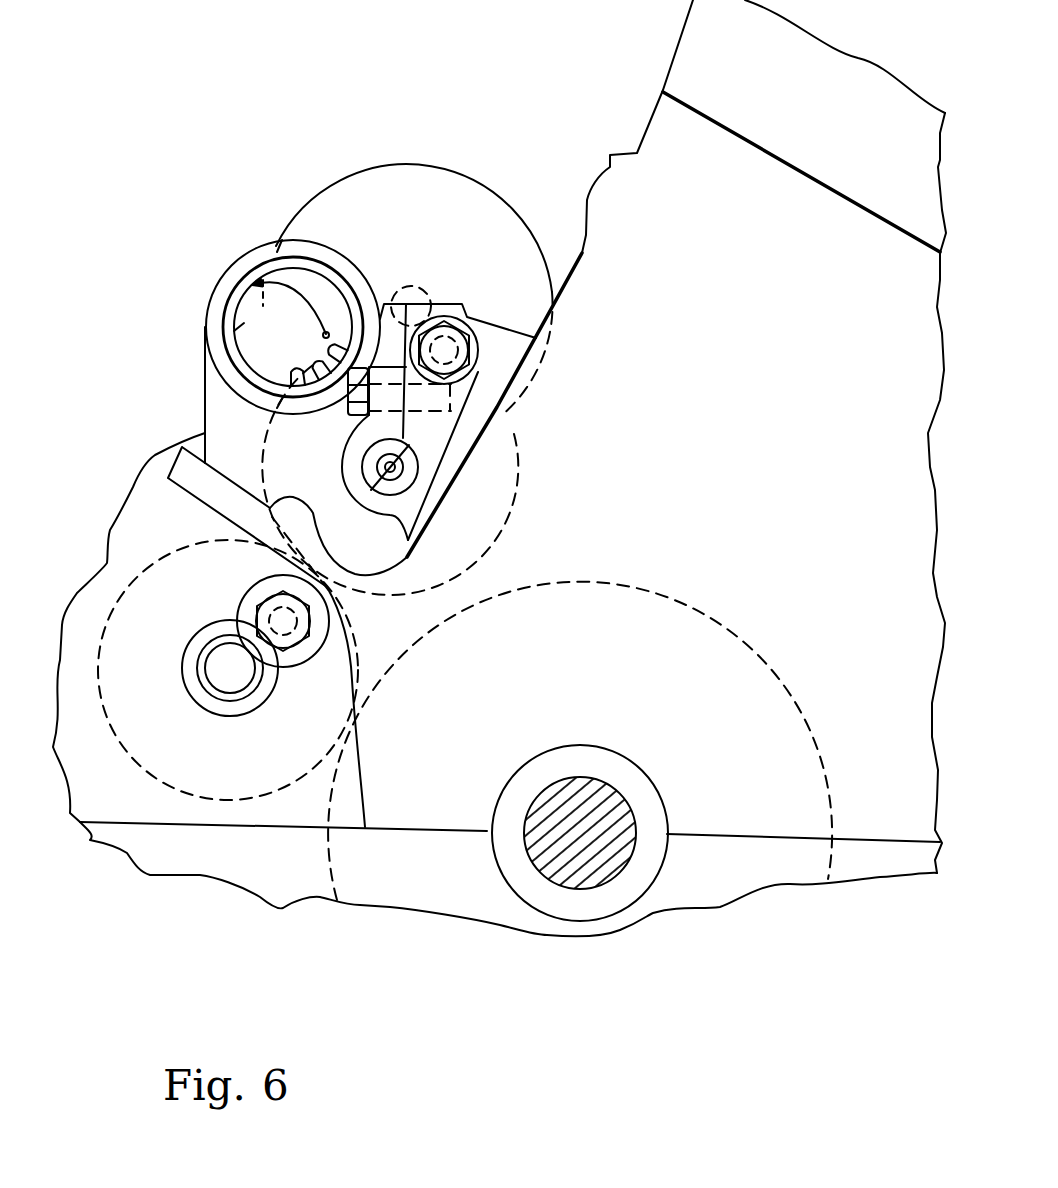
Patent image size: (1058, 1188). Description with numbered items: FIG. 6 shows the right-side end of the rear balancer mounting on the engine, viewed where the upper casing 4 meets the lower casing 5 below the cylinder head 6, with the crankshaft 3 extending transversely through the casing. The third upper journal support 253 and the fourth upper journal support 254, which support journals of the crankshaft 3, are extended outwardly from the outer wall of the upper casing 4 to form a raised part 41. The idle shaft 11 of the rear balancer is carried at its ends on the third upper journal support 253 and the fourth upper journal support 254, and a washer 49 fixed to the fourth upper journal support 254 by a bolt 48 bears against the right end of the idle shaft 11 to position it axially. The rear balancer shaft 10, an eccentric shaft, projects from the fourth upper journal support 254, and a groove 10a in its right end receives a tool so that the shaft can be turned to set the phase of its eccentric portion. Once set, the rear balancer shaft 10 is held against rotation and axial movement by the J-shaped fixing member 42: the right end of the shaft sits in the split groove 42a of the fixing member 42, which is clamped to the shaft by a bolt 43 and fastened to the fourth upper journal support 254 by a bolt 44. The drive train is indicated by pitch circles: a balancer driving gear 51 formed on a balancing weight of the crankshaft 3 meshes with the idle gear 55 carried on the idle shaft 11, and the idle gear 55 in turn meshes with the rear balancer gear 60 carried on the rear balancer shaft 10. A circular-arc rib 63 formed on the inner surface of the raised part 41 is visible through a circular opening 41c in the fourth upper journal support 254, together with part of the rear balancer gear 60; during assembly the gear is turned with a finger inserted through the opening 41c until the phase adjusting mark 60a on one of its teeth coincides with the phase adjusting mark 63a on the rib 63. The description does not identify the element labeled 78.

The crankshaft 3 is at (616, 807).
The upper casing 4 is at (572, 295).
The lower casing 5 is at (252, 880).
The cylinder head 6 is at (692, 57).
The rear balancer shaft 10 is at (408, 501).
The groove 10a is at (373, 492).
The idle shaft 11 is at (230, 680).
The third upper journal support 253 is at (257, 277).
The raised part 41 is at (205, 425).
The circular opening 41c is at (243, 323).
The fixing member 42 is at (461, 436).
The split groove 42a is at (371, 459).
The bolt 43 is at (356, 417).
The bolt 44 is at (461, 318).
The bolt 48 is at (262, 605).
The washer 49 is at (298, 657).
The balancer driving gear 51 is at (688, 607).
The idle gear 55 is at (146, 773).
The rear balancer gear 60 is at (520, 500).
The phase adjusting mark 60a is at (381, 297).
The rib 63 is at (303, 303).
The phase adjusting mark 63a is at (328, 332).
The cover 78 is at (372, 165).
The fourth upper journal support 254 is at (130, 498).